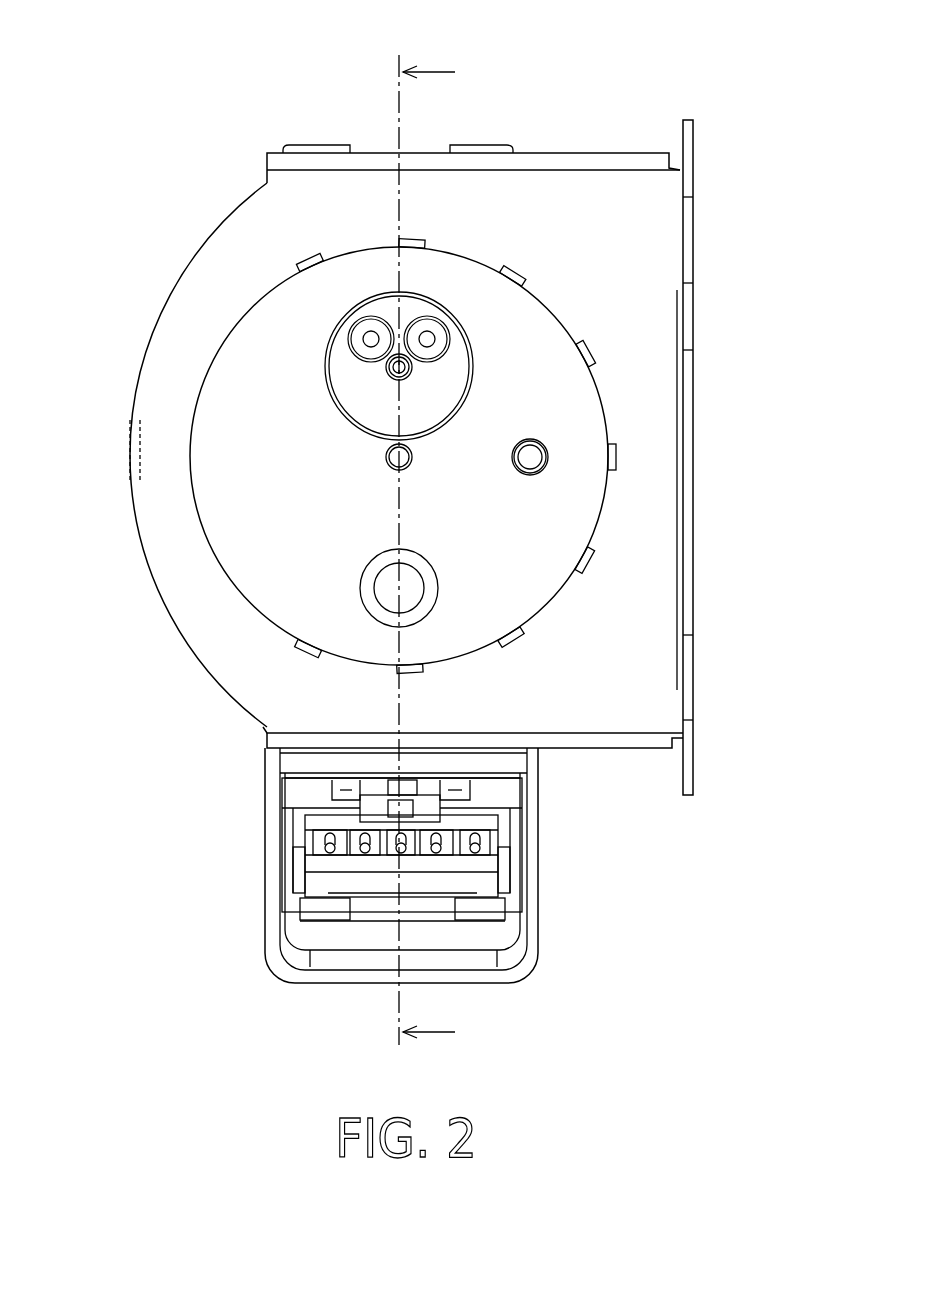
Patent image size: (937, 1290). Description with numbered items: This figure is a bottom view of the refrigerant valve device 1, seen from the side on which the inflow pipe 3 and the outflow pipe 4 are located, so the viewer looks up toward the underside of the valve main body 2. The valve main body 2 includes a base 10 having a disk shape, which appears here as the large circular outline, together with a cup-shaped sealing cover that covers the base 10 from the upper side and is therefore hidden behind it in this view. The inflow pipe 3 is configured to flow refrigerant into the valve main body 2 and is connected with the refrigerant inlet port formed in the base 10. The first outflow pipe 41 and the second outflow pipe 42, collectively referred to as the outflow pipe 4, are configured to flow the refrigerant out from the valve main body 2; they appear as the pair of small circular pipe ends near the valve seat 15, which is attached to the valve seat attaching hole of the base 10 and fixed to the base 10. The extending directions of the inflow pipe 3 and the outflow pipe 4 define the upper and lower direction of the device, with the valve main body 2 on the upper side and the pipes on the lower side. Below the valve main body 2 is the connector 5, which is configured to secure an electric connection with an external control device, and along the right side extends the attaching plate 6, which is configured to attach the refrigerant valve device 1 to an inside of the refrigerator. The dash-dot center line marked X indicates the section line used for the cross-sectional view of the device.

The refrigerant valve device 1 is at (75, 34).
The valve main body 2 is at (583, 147).
The inflow pipe 3 is at (387, 588).
The outflow pipe 4 is at (251, 272).
The first outflow pipe 41 is at (353, 347).
The second outflow pipe 42 is at (413, 322).
The connector 5 is at (487, 888).
The attaching plate 6 is at (688, 770).
The base 10 is at (252, 548).
The valve seat 15 is at (347, 377).